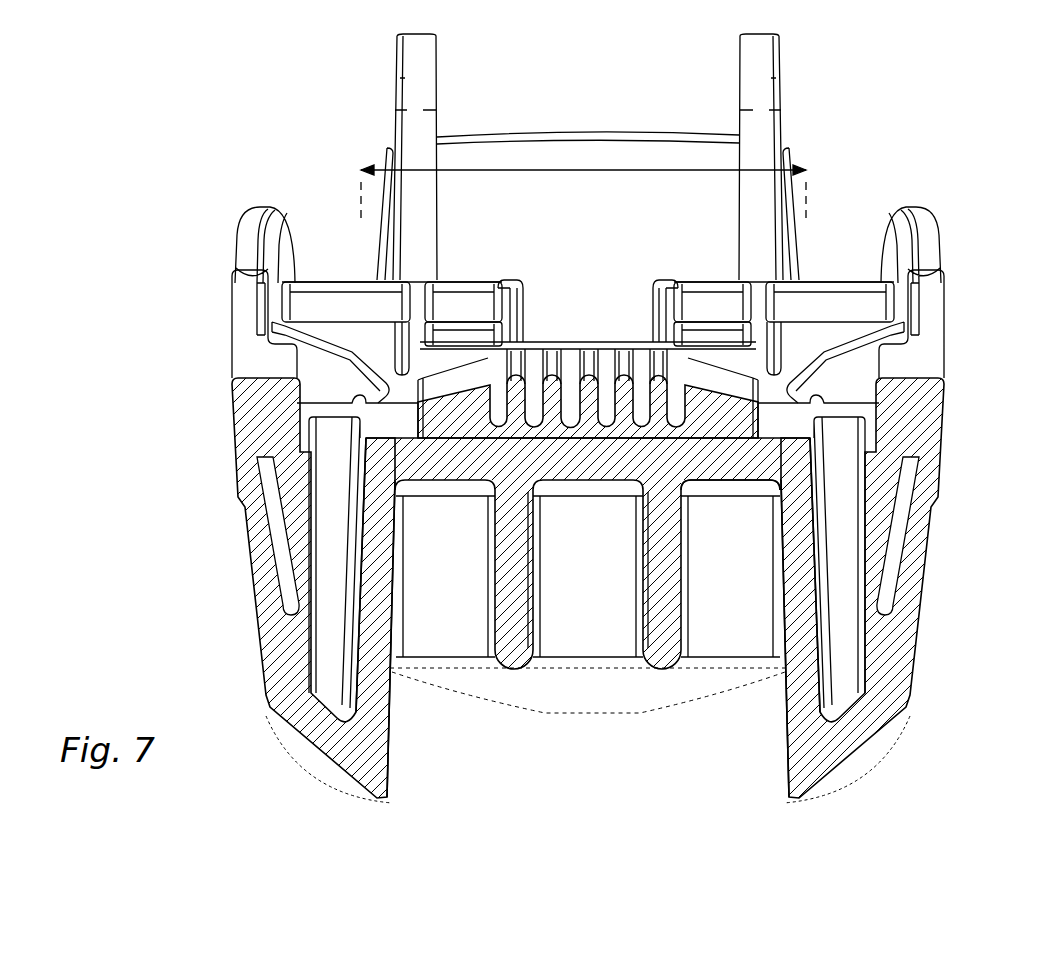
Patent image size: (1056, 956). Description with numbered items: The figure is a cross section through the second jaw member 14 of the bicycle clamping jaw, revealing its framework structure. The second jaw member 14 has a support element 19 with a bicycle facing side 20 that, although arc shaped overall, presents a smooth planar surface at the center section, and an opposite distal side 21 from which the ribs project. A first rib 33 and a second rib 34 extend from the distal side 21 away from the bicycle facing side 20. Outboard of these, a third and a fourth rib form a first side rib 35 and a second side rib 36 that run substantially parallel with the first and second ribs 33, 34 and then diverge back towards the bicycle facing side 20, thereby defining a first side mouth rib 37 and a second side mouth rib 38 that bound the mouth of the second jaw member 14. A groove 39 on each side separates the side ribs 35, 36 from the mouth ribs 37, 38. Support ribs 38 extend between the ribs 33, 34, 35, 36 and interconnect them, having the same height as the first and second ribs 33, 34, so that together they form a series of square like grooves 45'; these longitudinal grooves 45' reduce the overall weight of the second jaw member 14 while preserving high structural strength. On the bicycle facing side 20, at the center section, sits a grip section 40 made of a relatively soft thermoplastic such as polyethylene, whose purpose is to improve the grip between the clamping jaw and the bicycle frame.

The second jaw member 14 is at (522, 418).
The support element 19 is at (600, 462).
The bicycle facing side 20 is at (773, 440).
The distal side 21 is at (713, 478).
The first rib 33 is at (506, 617).
The second rib 34 is at (663, 633).
The first side rib 35 is at (378, 566).
The second side rib 36 is at (803, 622).
The first side mouth rib 37 is at (267, 549).
The support ribs 38 is at (915, 553).
The groove 39 is at (349, 499).
The grip section 40 is at (551, 359).
The square like grooves 45' is at (587, 604).